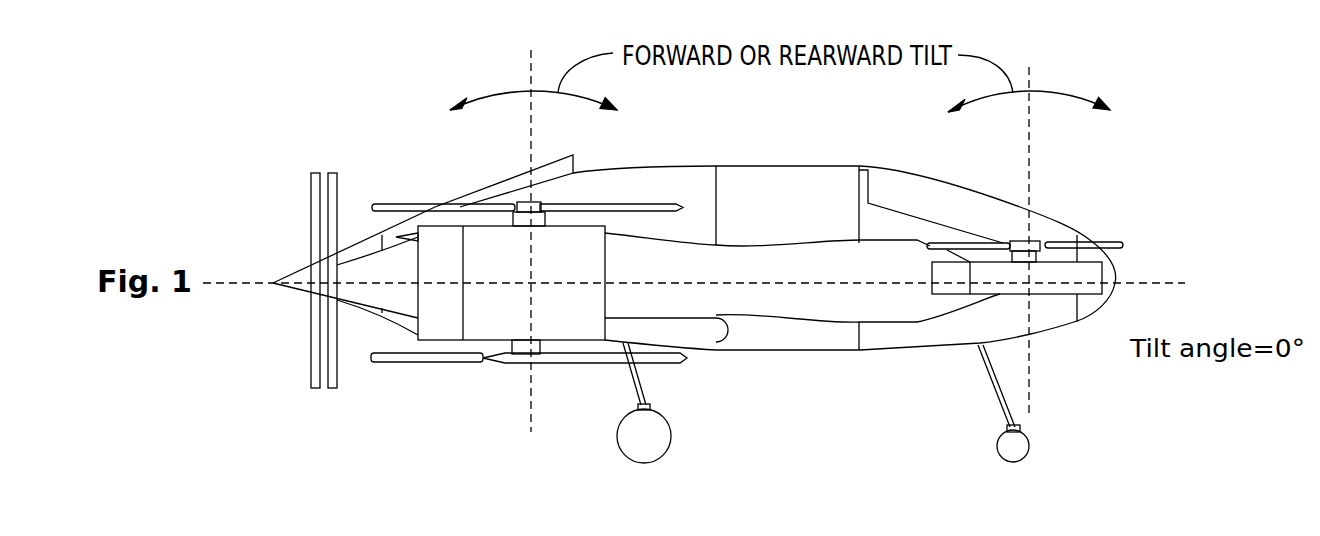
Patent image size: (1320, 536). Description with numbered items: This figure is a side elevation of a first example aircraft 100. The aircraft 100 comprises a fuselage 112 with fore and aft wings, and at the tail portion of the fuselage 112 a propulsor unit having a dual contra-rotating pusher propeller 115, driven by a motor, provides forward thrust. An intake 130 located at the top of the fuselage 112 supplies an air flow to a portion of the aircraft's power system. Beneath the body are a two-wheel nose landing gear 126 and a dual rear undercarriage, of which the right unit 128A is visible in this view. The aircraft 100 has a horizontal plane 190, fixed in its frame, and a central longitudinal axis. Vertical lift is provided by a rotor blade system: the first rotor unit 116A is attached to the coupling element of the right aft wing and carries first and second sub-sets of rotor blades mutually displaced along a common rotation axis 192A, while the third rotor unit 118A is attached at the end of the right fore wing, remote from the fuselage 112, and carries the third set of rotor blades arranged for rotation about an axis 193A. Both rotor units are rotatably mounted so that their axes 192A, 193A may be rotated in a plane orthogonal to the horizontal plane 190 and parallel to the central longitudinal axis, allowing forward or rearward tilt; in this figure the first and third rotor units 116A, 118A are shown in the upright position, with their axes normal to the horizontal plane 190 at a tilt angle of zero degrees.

The aircraft 100 is at (240, 195).
The fuselage 112 is at (742, 165).
The dual contra-rotating pusher propeller 115 is at (317, 338).
The first rotor unit 116A is at (453, 200).
The third rotor unit 118A is at (1001, 235).
The two-wheel nose landing gear 126 is at (1020, 445).
The right rear undercarriage unit 128A is at (635, 432).
The intake 130 is at (573, 167).
The horizontal plane 190 is at (1160, 283).
The common rotation axis 192A is at (530, 90).
The rotation axis 193A is at (1032, 127).